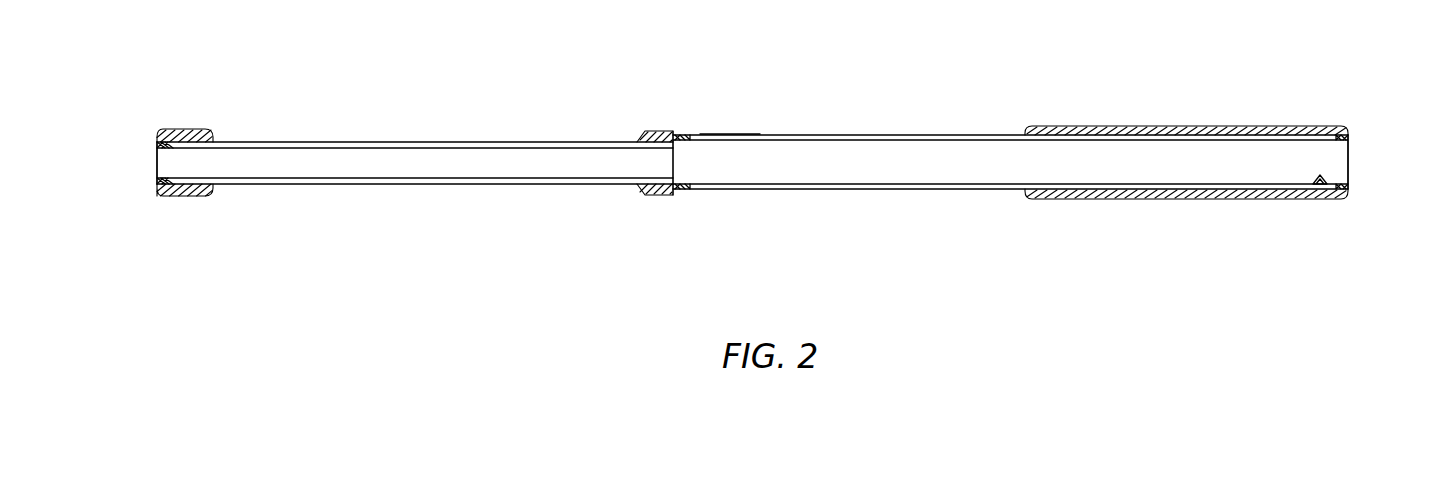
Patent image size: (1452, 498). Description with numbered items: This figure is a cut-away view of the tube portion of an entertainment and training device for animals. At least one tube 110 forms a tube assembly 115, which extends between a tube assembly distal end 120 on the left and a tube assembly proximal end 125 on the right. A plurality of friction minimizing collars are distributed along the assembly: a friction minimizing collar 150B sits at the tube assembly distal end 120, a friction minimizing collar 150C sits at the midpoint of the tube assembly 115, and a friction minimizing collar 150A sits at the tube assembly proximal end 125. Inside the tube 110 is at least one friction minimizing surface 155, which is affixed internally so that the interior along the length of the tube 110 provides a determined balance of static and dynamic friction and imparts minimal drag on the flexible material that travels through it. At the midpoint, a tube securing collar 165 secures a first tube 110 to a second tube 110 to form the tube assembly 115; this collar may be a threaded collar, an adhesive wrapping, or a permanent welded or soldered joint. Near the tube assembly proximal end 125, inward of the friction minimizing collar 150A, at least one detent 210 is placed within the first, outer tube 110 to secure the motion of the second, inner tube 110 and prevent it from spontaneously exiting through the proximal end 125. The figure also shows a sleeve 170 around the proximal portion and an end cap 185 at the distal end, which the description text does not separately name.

The tube 110 is at (727, 134).
The tube assembly 115 is at (518, 141).
The tube assembly distal end 120 is at (156, 162).
The tube assembly proximal end 125 is at (1349, 165).
The friction minimizing collar 150A is at (1345, 128).
The friction minimizing collar 150B is at (172, 196).
The friction minimizing collar 150C is at (686, 190).
The friction minimizing surface 155 is at (423, 173).
The tube securing collar 165 is at (657, 196).
The sleeve 170 is at (1208, 125).
The cap 185 is at (185, 129).
The detent 210 is at (1317, 178).